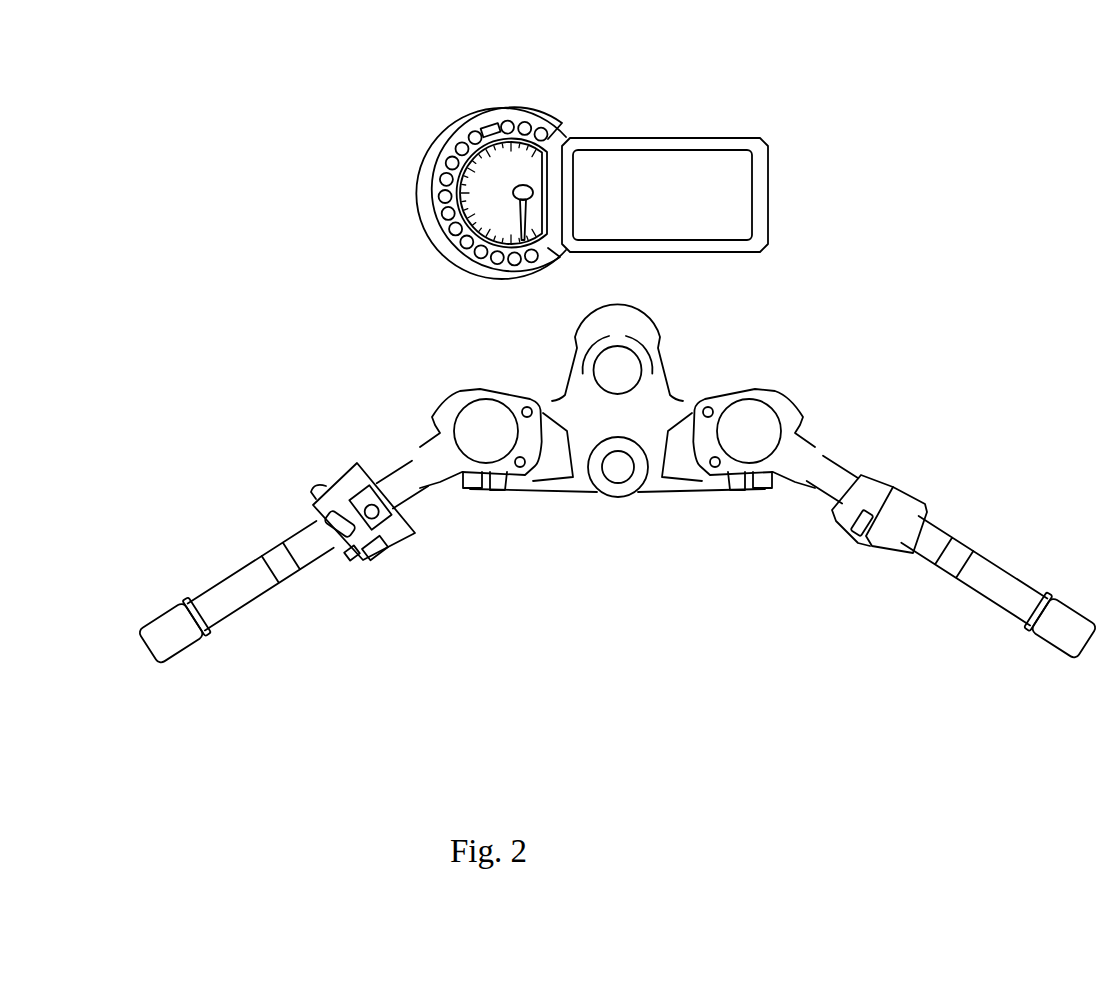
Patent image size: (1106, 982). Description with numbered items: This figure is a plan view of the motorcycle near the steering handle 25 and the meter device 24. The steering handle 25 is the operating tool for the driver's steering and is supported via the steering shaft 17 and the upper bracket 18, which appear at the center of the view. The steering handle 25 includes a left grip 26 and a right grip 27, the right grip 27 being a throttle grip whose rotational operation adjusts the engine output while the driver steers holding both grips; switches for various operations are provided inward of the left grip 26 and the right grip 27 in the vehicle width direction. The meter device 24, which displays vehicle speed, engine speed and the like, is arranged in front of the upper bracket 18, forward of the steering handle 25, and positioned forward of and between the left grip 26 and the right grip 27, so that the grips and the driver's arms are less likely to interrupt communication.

The steering shaft 17 is at (618, 483).
The upper bracket 18 is at (660, 392).
The meter device 24 is at (733, 118).
The steering handle 25 is at (877, 392).
The left grip 26 is at (250, 594).
The right grip 27 is at (987, 593).